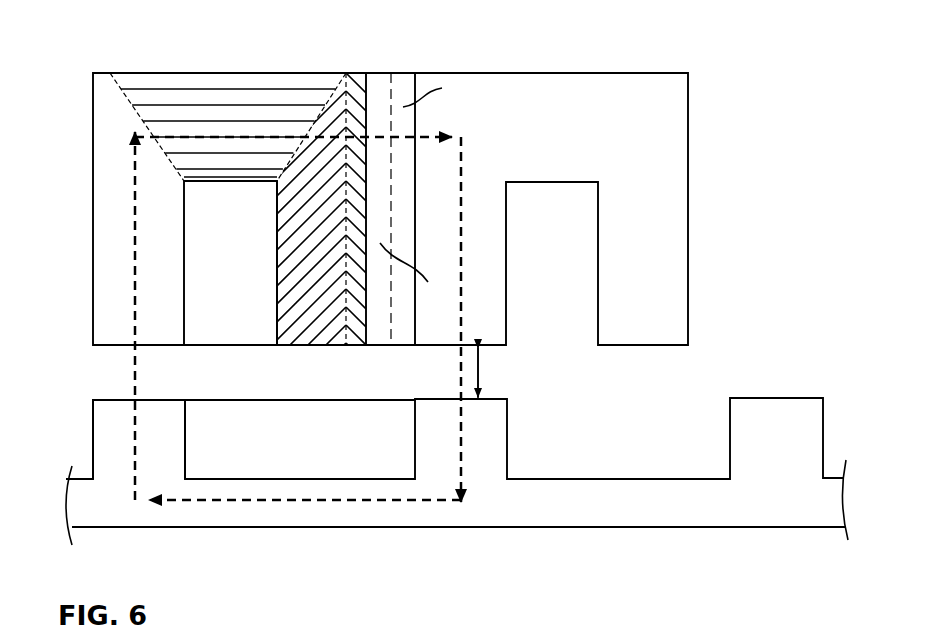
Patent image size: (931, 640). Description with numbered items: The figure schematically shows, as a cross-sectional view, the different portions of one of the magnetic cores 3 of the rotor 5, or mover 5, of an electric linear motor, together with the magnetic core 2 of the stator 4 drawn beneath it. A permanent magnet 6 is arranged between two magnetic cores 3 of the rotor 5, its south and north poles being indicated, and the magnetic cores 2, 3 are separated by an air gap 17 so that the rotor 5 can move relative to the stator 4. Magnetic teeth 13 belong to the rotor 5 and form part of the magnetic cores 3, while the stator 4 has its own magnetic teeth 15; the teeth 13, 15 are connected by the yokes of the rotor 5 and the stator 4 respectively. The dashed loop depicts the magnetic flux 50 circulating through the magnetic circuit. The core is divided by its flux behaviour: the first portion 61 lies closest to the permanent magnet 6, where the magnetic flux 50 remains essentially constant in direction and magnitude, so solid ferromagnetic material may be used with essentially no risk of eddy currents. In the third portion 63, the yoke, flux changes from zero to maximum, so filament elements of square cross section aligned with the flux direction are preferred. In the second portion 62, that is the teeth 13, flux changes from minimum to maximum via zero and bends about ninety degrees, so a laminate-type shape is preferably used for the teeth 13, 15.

The magnetic core 2 is at (312, 479).
The magnetic core 3 is at (105, 73).
The stator 4 is at (440, 428).
The rotor 5 is at (423, 210).
The permanent magnet 6 is at (292, 210).
The magnetic teeth 13 is at (190, 358).
The magnetic teeth 15 is at (92, 395).
The air gap 17 is at (478, 372).
The magnetic flux 50 is at (461, 183).
The first portion 61 is at (357, 337).
The second portion 62 is at (277, 270).
The third portion 63 is at (212, 82).